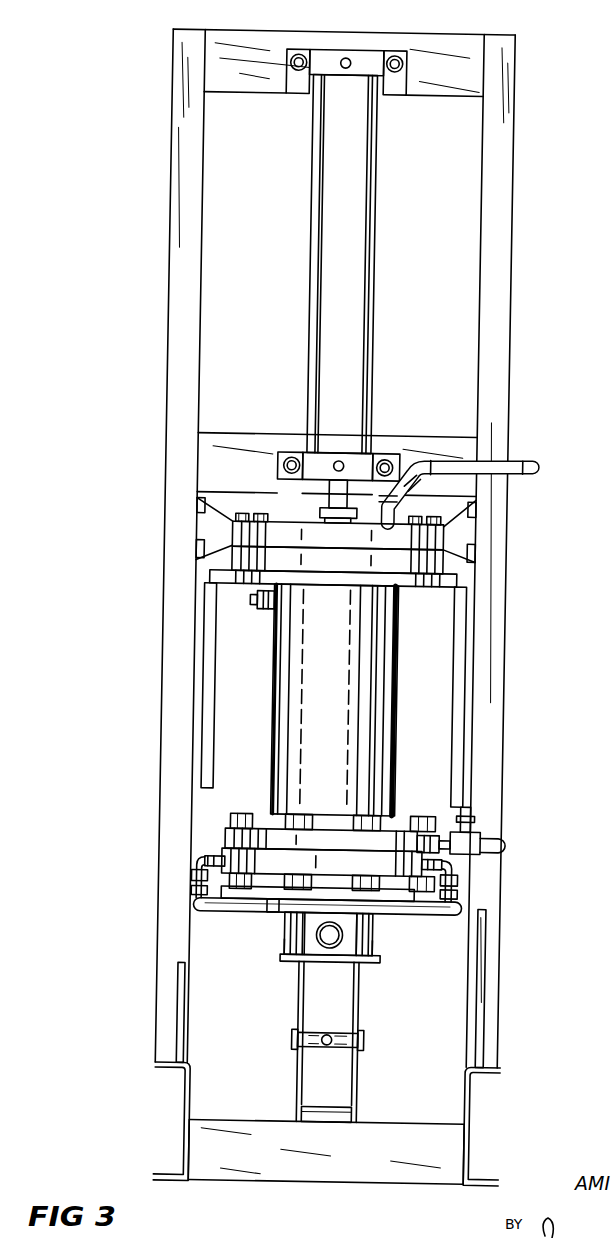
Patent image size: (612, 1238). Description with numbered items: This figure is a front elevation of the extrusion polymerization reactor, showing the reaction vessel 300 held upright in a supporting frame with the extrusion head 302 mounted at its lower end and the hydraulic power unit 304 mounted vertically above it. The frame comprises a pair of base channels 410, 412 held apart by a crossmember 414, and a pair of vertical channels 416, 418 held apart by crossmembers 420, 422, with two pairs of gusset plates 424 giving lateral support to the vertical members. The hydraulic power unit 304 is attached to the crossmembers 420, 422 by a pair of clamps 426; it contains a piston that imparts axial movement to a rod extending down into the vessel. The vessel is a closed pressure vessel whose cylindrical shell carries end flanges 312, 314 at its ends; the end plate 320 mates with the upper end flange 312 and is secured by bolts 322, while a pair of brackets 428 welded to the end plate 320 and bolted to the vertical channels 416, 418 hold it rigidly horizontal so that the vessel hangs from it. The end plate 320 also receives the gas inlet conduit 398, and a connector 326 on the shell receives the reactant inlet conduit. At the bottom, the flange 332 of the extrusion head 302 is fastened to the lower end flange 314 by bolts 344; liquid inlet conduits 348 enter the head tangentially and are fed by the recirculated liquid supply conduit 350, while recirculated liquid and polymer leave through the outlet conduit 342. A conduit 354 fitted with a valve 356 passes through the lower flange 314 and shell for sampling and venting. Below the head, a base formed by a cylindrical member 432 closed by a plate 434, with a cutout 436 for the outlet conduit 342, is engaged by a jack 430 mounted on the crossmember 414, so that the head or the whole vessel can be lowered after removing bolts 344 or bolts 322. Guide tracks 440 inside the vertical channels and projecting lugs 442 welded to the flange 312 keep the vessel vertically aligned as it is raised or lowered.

The reaction vessel 300 is at (275, 691).
The extrusion head 302 is at (295, 941).
The hydraulic power unit 304 is at (366, 249).
The end flange 312 is at (446, 558).
The end flange 314 is at (232, 840).
The end plate 320 is at (300, 504).
The bolts 322 is at (226, 525).
The connector 326 is at (263, 606).
The flange 332 is at (273, 916).
The outlet conduit 342 is at (339, 948).
The bolts 344 is at (265, 823).
The liquid inlet conduits 348 is at (209, 868).
The recirculated liquid supply conduit 350 is at (203, 909).
The conduit 354 is at (442, 848).
The valve 356 is at (486, 832).
The gas inlet conduit 398 is at (408, 476).
The base channel 410 is at (193, 1103).
The base channel 412 is at (488, 1100).
The crossmember 414 is at (397, 1124).
The vertical channel 416 is at (160, 335).
The vertical channel 418 is at (504, 289).
The crossmember 420 is at (219, 435).
The crossmember 422 is at (228, 94).
The gusset plates 424 is at (492, 965).
The clamps 426 is at (389, 93).
The brackets 428 is at (231, 538).
The jack 430 is at (371, 1056).
The cylindrical member 432 is at (401, 949).
The plate 434 is at (384, 956).
The cutout 436 is at (306, 946).
The guide tracks 440 is at (210, 738).
The projecting lugs 442 is at (211, 582).